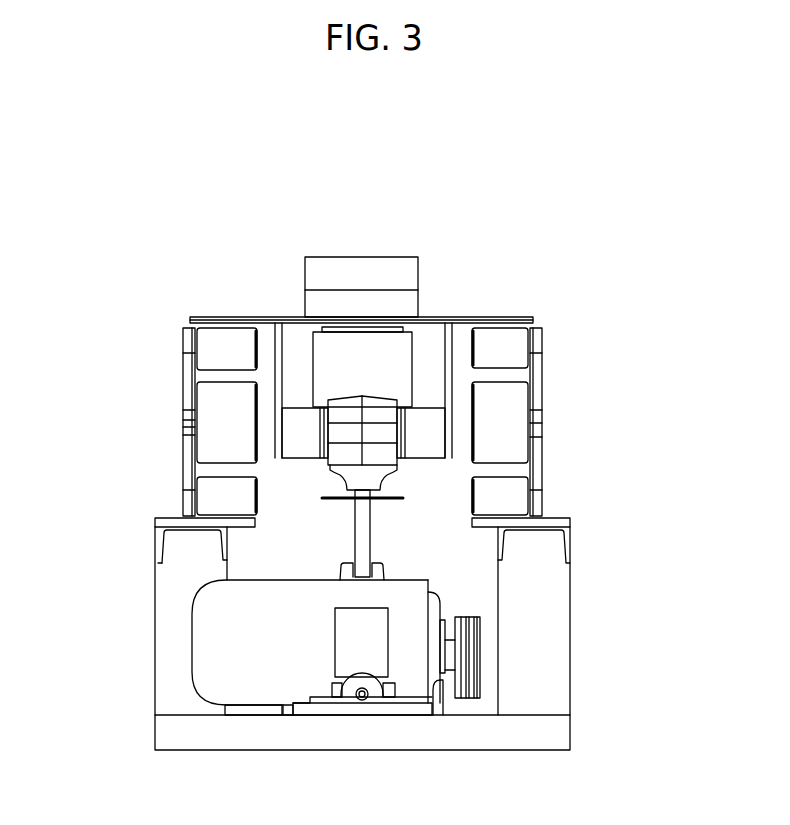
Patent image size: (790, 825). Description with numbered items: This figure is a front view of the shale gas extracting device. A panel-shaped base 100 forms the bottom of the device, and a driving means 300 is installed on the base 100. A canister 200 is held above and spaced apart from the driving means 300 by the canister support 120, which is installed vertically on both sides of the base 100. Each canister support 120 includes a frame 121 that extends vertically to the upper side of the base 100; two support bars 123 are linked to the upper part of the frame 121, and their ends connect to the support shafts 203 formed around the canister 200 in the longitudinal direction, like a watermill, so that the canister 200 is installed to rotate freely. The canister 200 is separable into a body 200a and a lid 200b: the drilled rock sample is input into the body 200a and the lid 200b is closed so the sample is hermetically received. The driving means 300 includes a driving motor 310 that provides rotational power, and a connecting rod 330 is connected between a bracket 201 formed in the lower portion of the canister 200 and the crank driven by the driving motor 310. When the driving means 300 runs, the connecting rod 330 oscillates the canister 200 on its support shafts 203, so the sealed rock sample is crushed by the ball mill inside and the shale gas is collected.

The base 100 is at (542, 735).
The canister support 120 is at (440, 521).
The frame 121 is at (540, 598).
The support bar 123 is at (423, 422).
The canister 200 is at (388, 378).
The body 200a is at (398, 355).
The lid 200b is at (407, 273).
The bracket 201 is at (320, 428).
The support shaft 203 is at (507, 340).
The driving means 300 is at (246, 602).
The driving motor 310 is at (220, 658).
The connecting rod 330 is at (363, 543).